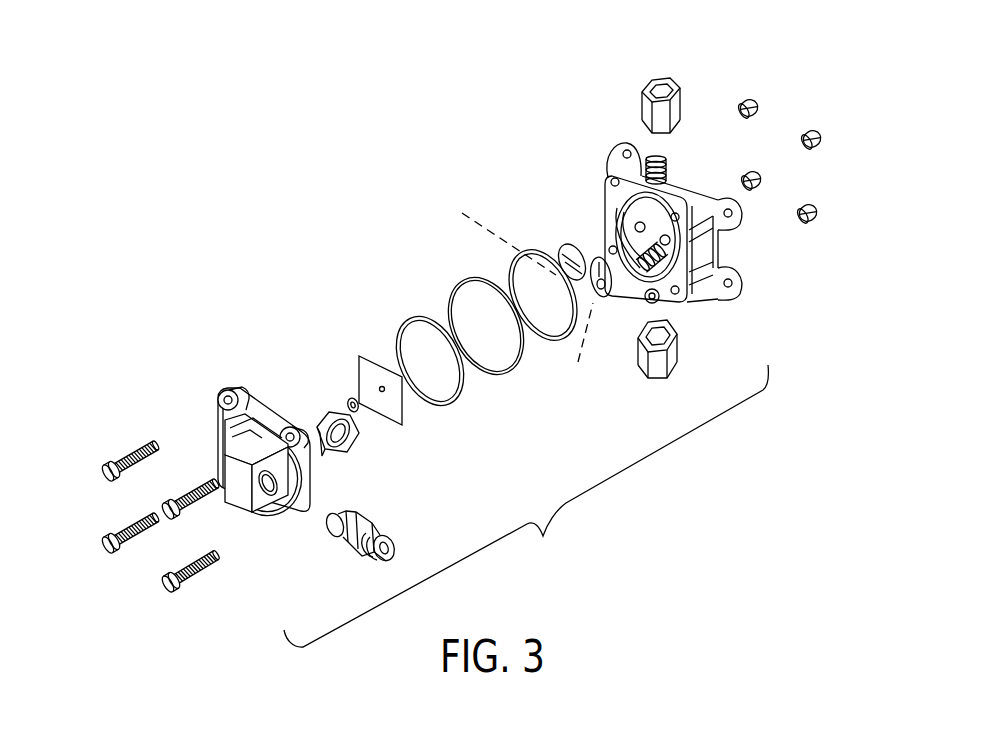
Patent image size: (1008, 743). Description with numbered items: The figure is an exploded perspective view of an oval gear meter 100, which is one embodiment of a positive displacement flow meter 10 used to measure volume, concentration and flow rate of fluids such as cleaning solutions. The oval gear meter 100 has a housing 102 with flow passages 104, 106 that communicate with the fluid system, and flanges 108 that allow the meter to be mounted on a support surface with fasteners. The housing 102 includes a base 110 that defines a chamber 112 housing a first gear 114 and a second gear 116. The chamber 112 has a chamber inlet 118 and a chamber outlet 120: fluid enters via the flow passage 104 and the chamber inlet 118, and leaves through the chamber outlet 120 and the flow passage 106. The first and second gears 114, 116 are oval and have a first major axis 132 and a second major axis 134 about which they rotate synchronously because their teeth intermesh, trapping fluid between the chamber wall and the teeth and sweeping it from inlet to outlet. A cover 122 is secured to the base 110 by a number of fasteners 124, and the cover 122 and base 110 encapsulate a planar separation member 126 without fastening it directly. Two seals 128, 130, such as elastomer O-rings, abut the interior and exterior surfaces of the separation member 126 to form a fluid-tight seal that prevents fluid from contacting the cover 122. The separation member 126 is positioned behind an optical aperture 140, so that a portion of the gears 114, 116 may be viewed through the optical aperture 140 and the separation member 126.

The oval gear meter 100 is at (502, 79).
The positive displacement flow meter 10 is at (671, 224).
The housing 102 is at (526, 506).
The flow passage 104 is at (667, 302).
The flow passage 106 is at (667, 164).
The flange 108 is at (615, 152).
The base 110 is at (611, 182).
The chamber 112 is at (636, 222).
The first gear 114 is at (604, 298).
The second gear 116 is at (560, 250).
The chamber inlet 118 is at (645, 276).
The chamber outlet 120 is at (693, 243).
The cover 122 is at (248, 394).
The fasteners 124 is at (105, 480).
The separation member 126 is at (474, 300).
The seal 128 is at (516, 260).
The seal 130 is at (454, 404).
The first major axis 132 is at (578, 345).
The second major axis 134 is at (493, 238).
The optical aperture 140 is at (362, 357).